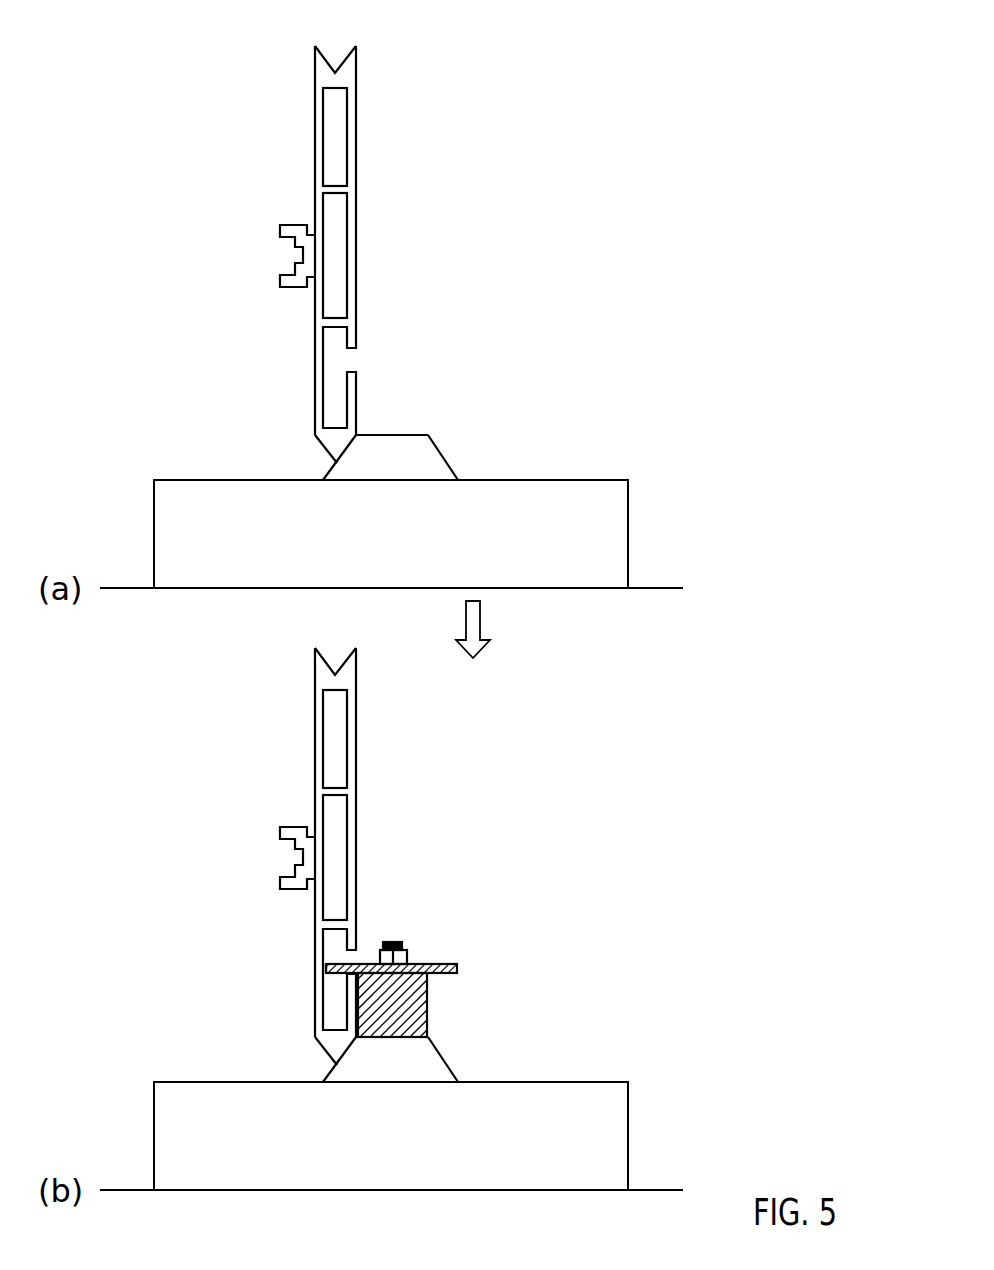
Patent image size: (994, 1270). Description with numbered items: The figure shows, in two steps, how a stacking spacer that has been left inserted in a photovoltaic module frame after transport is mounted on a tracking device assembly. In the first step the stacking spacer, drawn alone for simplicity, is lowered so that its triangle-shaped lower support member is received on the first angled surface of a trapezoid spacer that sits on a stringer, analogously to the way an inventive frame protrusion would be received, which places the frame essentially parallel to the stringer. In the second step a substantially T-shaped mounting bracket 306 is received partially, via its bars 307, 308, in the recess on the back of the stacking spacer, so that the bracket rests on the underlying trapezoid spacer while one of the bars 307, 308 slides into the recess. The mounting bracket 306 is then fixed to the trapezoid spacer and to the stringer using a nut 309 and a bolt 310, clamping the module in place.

The mounting bracket 306 is at (417, 1000).
The bar 307 is at (328, 963).
The bar 308 is at (458, 967).
The nut 309 is at (407, 957).
The bolt 310 is at (402, 941).